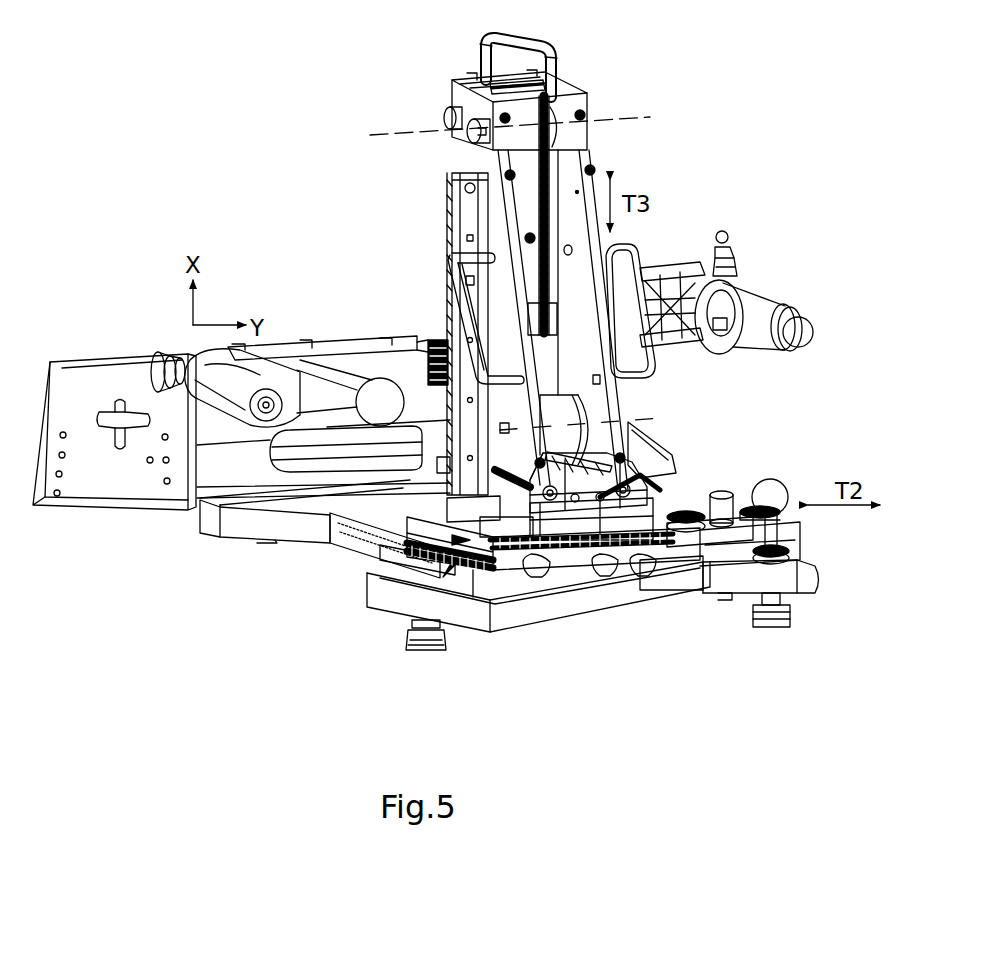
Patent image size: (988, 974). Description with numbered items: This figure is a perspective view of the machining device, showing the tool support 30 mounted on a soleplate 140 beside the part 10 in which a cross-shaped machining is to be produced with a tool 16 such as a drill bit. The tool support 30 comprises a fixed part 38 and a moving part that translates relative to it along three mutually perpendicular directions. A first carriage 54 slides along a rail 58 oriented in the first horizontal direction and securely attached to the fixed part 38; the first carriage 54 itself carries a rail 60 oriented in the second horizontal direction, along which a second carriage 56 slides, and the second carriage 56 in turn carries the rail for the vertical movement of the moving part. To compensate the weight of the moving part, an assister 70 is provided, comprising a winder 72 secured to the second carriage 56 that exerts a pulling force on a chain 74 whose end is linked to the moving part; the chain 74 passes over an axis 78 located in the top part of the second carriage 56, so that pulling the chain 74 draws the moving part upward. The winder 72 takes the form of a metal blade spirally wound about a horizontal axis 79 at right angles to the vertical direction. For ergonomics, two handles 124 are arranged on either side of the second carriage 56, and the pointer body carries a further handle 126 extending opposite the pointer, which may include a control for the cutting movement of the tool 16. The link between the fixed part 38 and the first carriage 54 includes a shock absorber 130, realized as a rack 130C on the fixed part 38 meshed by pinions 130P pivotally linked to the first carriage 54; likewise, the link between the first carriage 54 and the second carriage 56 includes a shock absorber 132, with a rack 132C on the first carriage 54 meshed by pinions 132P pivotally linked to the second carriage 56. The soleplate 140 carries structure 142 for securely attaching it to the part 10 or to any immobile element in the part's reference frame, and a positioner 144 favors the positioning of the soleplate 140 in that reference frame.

The part 10 is at (70, 362).
The tool 16 is at (168, 356).
The tool support 30 is at (650, 86).
The fixed part 38 is at (603, 598).
The first carriage 54 is at (455, 556).
The second carriage 56 is at (625, 408).
The rail 58 is at (535, 580).
The rail 60 is at (392, 553).
The assister 70 is at (740, 266).
The winder 72 is at (655, 482).
The chain 74 is at (556, 142).
The axis 78 is at (408, 135).
The horizontal axis 79 is at (687, 415).
The handle 124 is at (453, 258).
The handle 126 is at (782, 302).
The shock absorber 130 is at (452, 572).
The rack 130C is at (465, 570).
The pinion 130P is at (440, 580).
The shock absorber 132 is at (615, 580).
The pinion 132P is at (575, 580).
The rack 132C is at (715, 597).
The soleplate 140 is at (258, 530).
The structure 142 is at (803, 553).
The positioner 144 is at (738, 488).